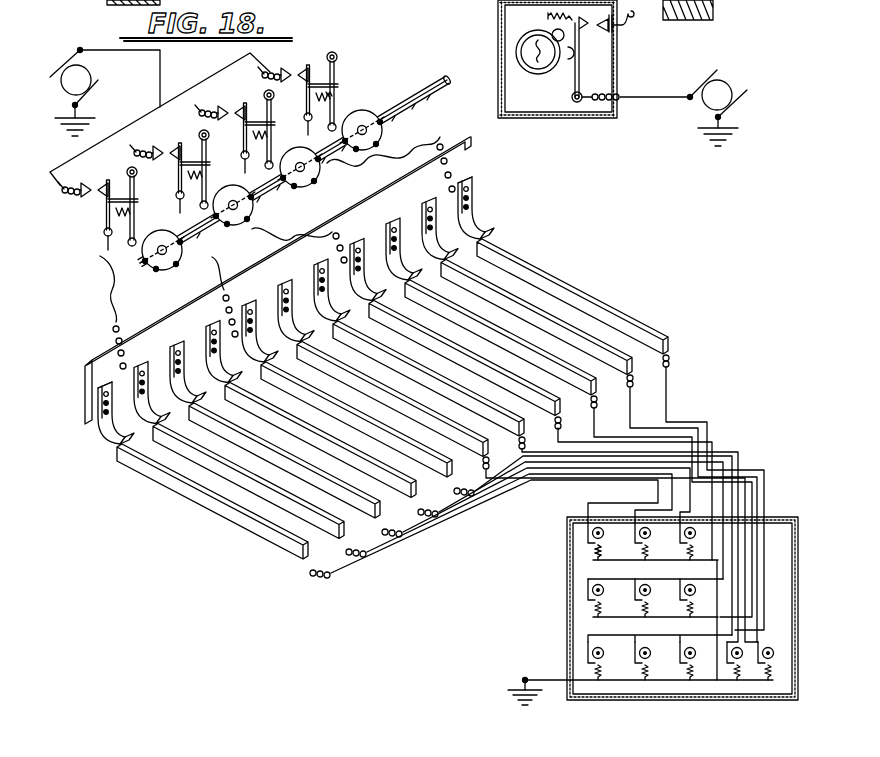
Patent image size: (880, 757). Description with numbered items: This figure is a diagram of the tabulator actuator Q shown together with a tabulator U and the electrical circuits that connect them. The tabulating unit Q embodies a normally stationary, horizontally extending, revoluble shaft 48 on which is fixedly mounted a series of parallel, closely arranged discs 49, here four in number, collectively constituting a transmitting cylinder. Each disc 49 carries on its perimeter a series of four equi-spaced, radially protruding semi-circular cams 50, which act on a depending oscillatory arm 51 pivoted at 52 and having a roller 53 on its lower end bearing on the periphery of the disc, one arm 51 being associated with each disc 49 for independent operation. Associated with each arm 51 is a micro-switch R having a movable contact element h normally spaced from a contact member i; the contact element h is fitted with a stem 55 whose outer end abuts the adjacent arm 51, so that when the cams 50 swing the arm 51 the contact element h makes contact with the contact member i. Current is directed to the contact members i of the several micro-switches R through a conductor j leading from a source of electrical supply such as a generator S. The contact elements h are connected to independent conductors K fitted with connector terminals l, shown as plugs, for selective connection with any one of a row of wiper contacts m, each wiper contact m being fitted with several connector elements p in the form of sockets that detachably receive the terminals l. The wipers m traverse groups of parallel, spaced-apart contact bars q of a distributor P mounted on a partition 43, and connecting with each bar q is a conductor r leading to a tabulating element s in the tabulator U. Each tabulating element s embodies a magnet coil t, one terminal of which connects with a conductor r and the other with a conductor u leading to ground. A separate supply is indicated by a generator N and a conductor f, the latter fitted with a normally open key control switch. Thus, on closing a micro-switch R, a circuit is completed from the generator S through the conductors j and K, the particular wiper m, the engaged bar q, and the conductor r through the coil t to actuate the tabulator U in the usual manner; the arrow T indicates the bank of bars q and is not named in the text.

The partition 43 is at (746, 6).
The revoluble shaft 48 is at (440, 80).
The disc 49 is at (158, 270).
The cam 50 is at (176, 272).
The arm 51 is at (136, 200).
The pivot 52 is at (138, 172).
The roller 53 is at (332, 95).
The stem 55 is at (110, 203).
The generator S is at (61, 92).
The conductor j is at (160, 61).
The contact member i is at (174, 122).
The movable contact element h is at (218, 147).
The micro-switch R is at (87, 226).
The conductor K is at (100, 256).
The tabulating unit Q is at (391, 56).
The distributor P is at (617, 47).
The conductor f is at (624, 22).
The generator N is at (752, 72).
The connector terminal l is at (100, 392).
The connector element p is at (104, 413).
The wiper contact m is at (102, 437).
The contact bar q is at (185, 496).
The conductor r is at (465, 525).
The contact bank T is at (117, 484).
The tabulating element s is at (577, 537).
The magnet coil t is at (596, 551).
The tabulator U is at (556, 610).
The conductor u is at (545, 676).